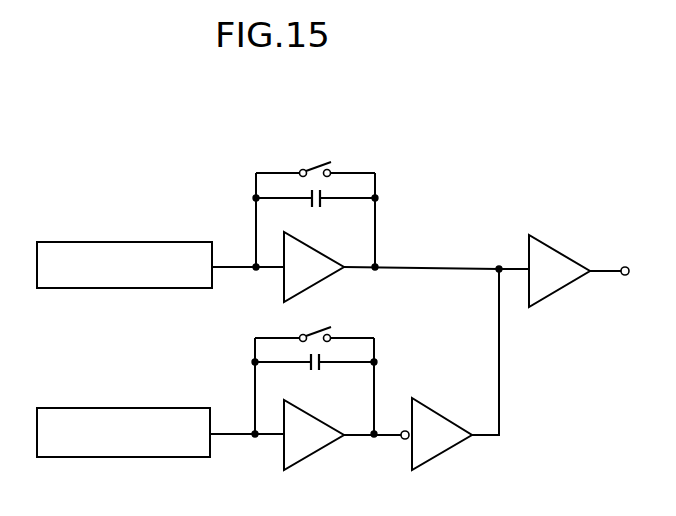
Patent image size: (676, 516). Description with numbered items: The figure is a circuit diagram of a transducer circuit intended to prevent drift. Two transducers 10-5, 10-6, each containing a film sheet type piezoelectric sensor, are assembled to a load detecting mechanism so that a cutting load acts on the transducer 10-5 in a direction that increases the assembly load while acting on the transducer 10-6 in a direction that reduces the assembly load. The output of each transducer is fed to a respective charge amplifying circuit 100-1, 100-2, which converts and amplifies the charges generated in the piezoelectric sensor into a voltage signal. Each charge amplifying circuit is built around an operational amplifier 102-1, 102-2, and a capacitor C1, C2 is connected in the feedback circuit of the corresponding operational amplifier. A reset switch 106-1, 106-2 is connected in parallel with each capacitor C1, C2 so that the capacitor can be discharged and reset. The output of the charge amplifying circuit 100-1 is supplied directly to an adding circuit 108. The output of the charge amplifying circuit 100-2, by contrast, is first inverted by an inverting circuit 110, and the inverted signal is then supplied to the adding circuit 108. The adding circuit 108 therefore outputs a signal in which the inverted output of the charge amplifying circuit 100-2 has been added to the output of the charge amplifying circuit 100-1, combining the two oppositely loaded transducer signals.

The transducer 10-5 is at (122, 241).
The transducer 10-6 is at (115, 406).
The charge amplifying circuit 100-1 is at (301, 206).
The charge amplifying circuit 100-2 is at (288, 397).
The operational amplifier 102-1 is at (344, 269).
The operational amplifier 102-2 is at (326, 447).
The reset switch 106-1 is at (322, 163).
The reset switch 106-2 is at (330, 329).
The capacitor C1 is at (315, 211).
The capacitor C2 is at (314, 379).
The adding circuit 108 is at (566, 252).
The inverting circuit 110 is at (448, 415).